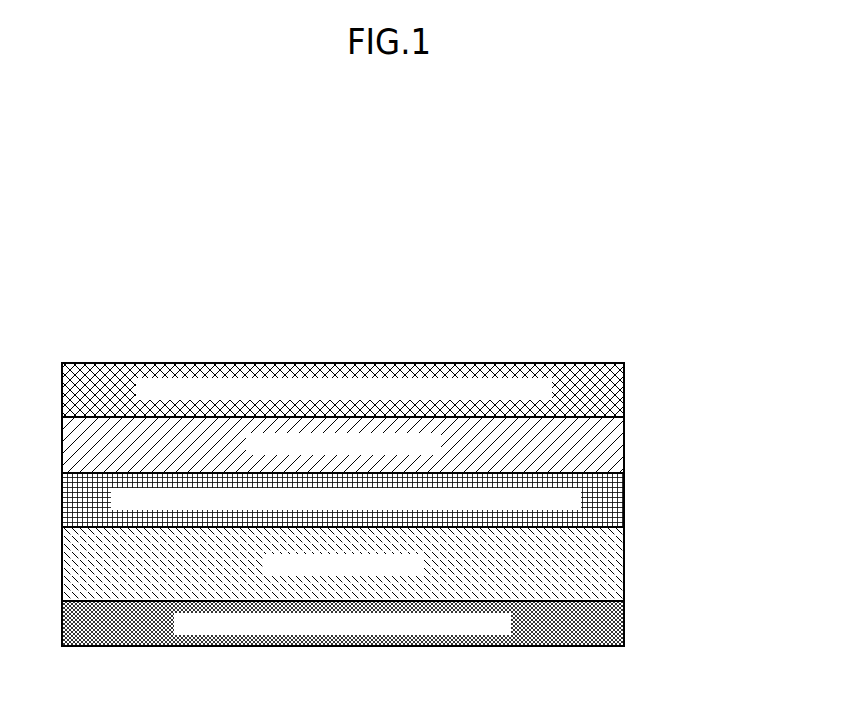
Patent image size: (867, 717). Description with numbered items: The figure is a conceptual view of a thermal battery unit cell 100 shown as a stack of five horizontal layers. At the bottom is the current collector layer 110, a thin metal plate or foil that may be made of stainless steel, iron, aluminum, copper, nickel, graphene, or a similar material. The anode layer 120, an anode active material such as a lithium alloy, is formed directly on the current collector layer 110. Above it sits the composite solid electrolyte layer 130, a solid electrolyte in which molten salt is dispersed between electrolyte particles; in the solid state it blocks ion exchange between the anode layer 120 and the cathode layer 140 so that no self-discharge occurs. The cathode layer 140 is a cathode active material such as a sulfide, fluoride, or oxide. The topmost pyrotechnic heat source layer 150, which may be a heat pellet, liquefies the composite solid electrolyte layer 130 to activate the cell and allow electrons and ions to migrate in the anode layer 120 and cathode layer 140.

The thermal battery unit cell 100 is at (86, 322).
The current collector layer 110 is at (624, 622).
The anode layer 120 is at (624, 558).
The composite solid electrolyte layer 130 is at (624, 493).
The cathode layer 140 is at (624, 438).
The pyrotechnic heat source layer 150 is at (624, 383).